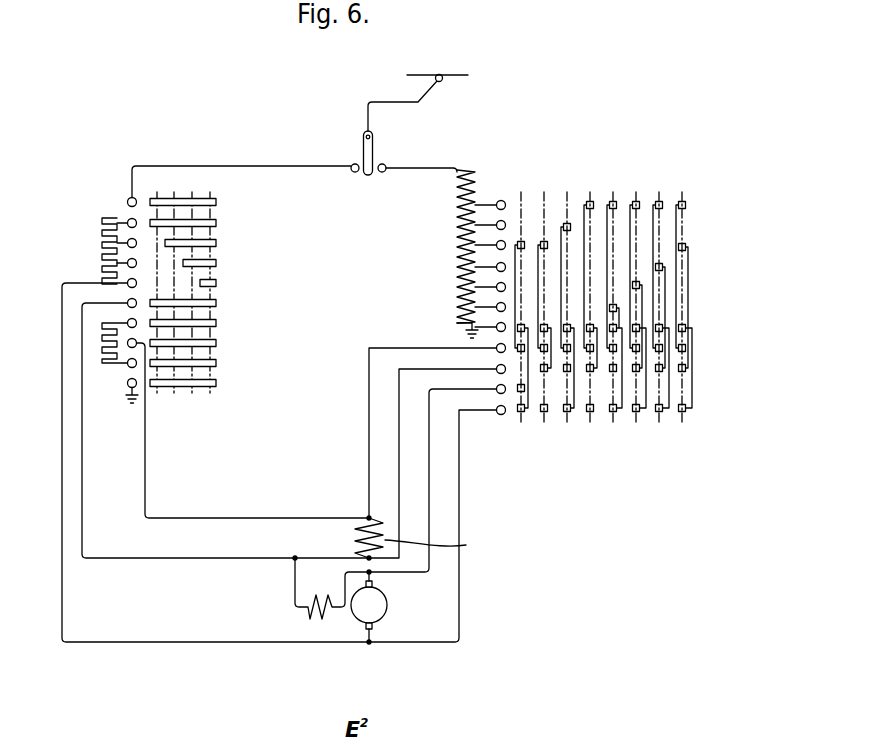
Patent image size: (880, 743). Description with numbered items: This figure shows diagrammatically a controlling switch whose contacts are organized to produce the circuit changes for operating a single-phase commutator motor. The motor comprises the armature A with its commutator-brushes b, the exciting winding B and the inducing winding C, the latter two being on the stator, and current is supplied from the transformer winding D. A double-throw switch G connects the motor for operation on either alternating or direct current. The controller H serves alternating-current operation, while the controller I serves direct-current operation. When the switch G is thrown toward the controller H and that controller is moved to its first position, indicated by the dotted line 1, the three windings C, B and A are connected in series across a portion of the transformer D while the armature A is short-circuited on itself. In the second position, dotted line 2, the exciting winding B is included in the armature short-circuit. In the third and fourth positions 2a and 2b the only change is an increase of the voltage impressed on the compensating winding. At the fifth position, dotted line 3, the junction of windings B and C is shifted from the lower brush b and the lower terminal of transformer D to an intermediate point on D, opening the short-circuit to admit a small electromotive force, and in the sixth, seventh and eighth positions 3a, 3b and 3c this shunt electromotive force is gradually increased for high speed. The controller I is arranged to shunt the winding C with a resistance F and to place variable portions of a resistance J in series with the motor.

The controller for direct-current operation I is at (238, 284).
The resistance J is at (102, 248).
The resistance F is at (111, 366).
The double-throw switch G is at (373, 152).
The transformer winding D is at (456, 254).
The controller for alternating-current operation H is at (603, 284).
The first position 1 is at (521, 299).
The second position 2 is at (544, 299).
The third position 2a is at (567, 298).
The fourth position 2b is at (590, 298).
The fifth position 3 is at (614, 299).
The sixth position 3a is at (637, 298).
The seventh position 3b is at (660, 298).
The eighth position 3c is at (683, 298).
The inducing winding C is at (355, 536).
The exciting winding B is at (307, 611).
The armature A is at (387, 607).
The commutator-brushes b is at (382, 631).